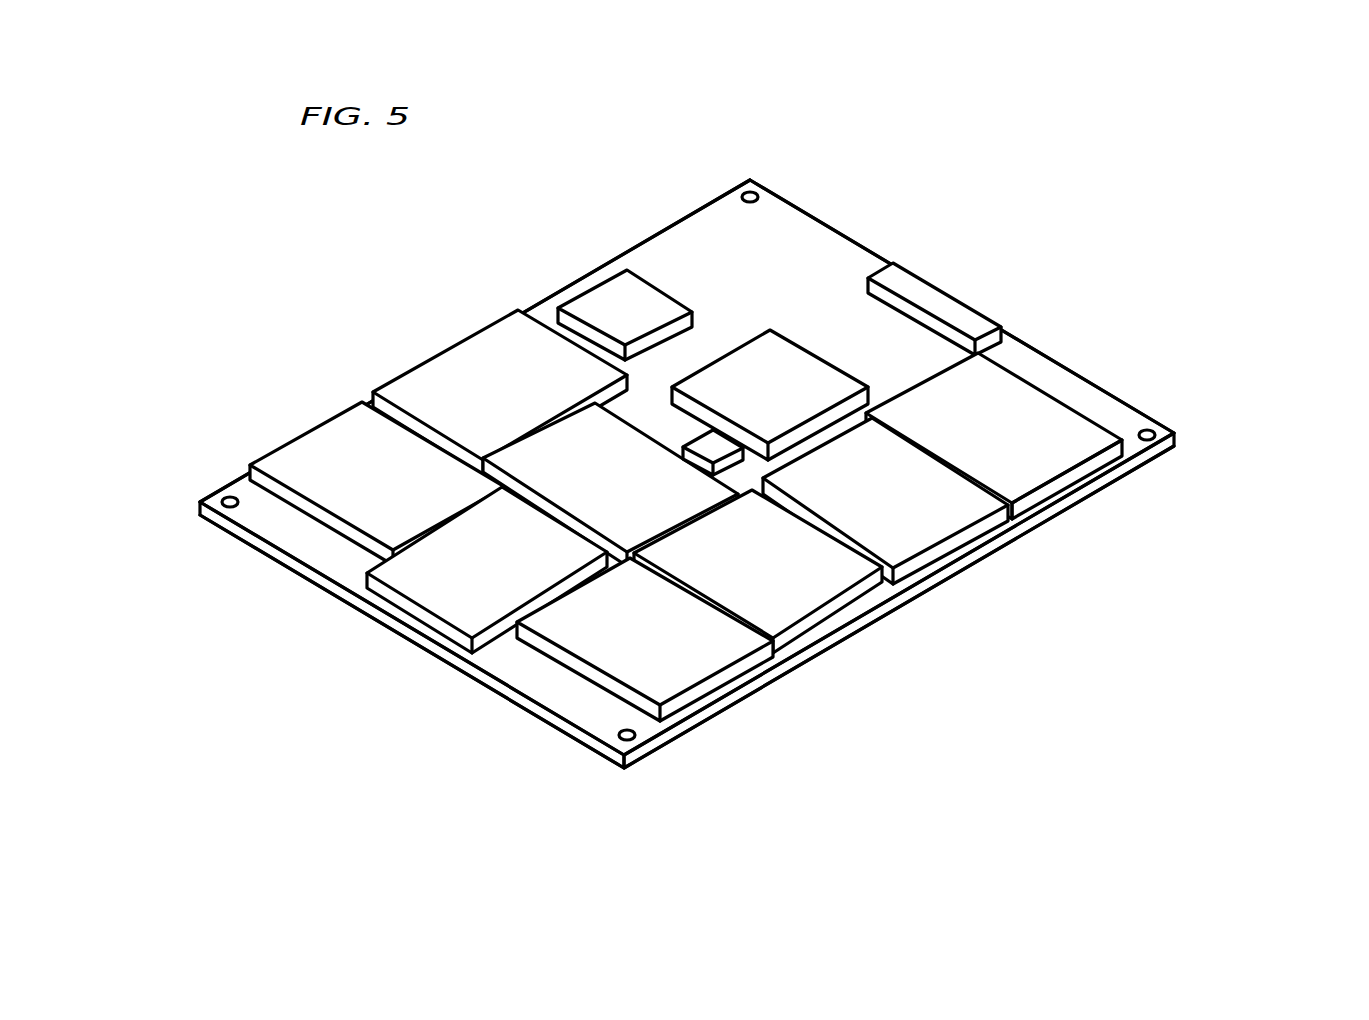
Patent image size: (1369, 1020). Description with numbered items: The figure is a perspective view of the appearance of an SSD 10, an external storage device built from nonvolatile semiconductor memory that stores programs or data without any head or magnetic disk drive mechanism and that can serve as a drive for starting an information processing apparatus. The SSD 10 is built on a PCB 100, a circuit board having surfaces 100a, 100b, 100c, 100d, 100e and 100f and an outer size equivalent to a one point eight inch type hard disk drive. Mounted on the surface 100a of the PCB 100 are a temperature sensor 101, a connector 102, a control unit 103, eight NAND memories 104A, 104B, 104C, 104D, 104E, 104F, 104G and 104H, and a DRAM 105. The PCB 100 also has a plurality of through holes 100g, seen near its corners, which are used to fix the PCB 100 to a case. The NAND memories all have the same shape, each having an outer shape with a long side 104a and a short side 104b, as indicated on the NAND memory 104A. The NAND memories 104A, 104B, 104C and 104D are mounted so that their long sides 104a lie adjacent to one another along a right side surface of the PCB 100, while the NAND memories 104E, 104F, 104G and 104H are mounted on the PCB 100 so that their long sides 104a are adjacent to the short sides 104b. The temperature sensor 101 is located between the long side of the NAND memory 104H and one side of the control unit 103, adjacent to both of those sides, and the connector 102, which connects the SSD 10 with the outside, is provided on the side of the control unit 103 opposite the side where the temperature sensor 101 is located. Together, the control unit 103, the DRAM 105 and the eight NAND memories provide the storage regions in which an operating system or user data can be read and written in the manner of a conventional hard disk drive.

The SSD 10 is at (696, 458).
The PCB 100 is at (639, 469).
The surface 100a is at (243, 490).
The surface 100b is at (260, 553).
The surface 100c is at (553, 718).
The surface 100d is at (1150, 457).
The surface 100e is at (1107, 397).
The surface 100f is at (697, 213).
The through hole 100g is at (762, 195).
The temperature sensor 101 is at (732, 460).
The connector 102 is at (948, 303).
The control unit 103 is at (773, 348).
The NAND memory 104A is at (1108, 438).
The long side 104a is at (1025, 377).
The short side 104b is at (1030, 495).
The NAND memory 104B is at (943, 528).
The NAND memory 104C is at (815, 598).
The NAND memory 104D is at (707, 660).
The NAND memory 104E is at (445, 607).
The NAND memory 104F is at (315, 445).
The NAND memory 104G is at (458, 362).
The NAND memory 104H is at (578, 407).
The DRAM 105 is at (600, 290).